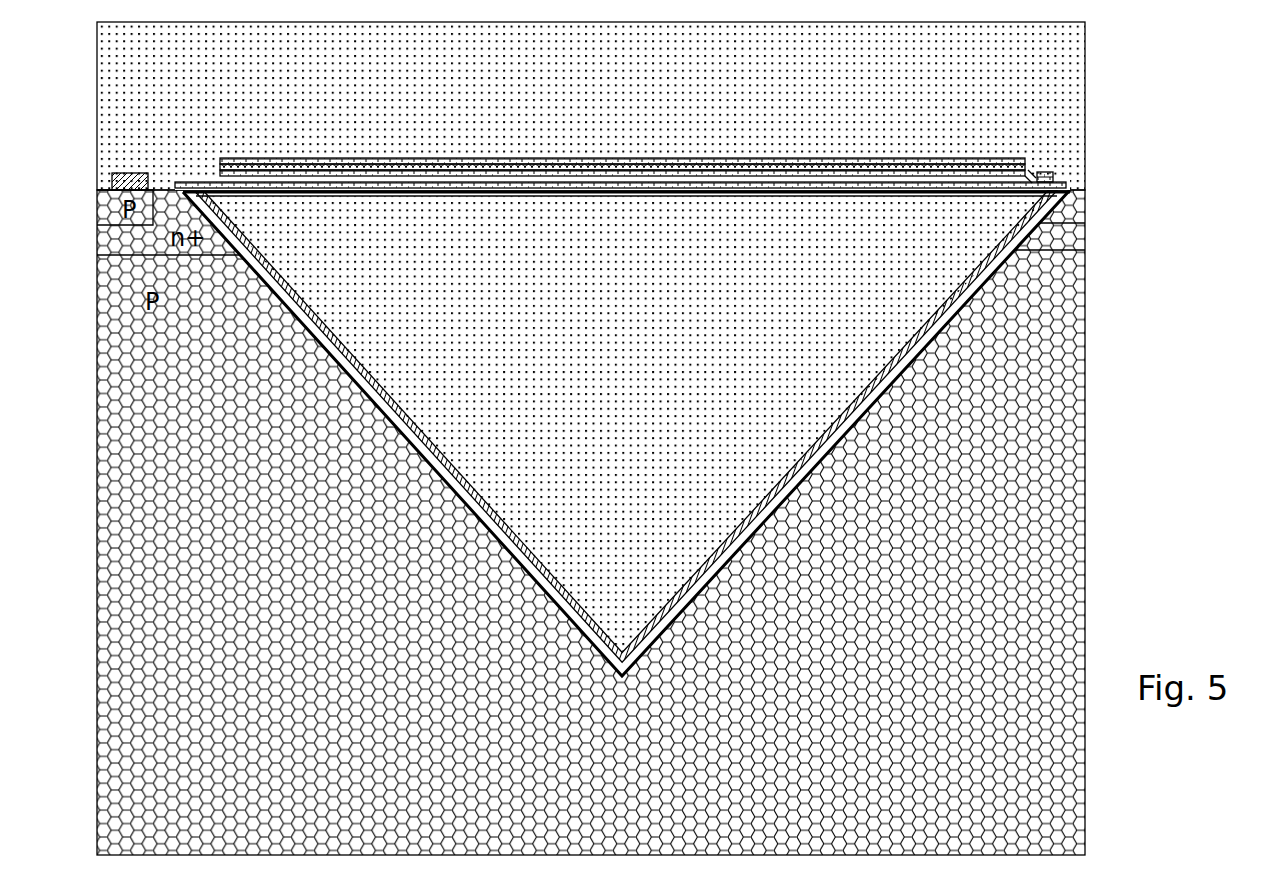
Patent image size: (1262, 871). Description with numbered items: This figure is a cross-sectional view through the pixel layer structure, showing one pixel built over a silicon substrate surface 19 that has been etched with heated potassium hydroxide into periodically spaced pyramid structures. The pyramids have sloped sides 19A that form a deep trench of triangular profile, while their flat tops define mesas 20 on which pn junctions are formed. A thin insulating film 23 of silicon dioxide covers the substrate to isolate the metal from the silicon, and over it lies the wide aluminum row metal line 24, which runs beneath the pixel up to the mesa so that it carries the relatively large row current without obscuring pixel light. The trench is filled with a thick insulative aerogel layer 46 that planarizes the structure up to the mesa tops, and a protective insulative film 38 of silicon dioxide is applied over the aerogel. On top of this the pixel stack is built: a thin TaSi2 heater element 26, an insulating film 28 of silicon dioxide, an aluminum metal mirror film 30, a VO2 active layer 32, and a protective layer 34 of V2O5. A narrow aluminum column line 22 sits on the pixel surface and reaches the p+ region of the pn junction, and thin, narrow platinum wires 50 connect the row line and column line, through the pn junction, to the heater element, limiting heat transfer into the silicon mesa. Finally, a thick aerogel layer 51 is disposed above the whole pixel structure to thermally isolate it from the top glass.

The Si substrate surface 19 is at (928, 592).
The sloped sides 19A is at (388, 440).
The mesa 20 is at (162, 187).
The column line 22 is at (126, 172).
The insulating film 23 is at (905, 368).
The row metal line 24 is at (885, 356).
The heater element 26 is at (598, 197).
The insulating film 28 is at (1045, 174).
The metal mirror film 30 is at (1028, 170).
The VO2 active layer 32 is at (916, 158).
The protective layer 34 is at (895, 158).
The insulative film 38 is at (565, 198).
The aerogel layer 46 is at (683, 362).
The wires 50 is at (193, 183).
The aerogel layer 51 is at (103, 68).